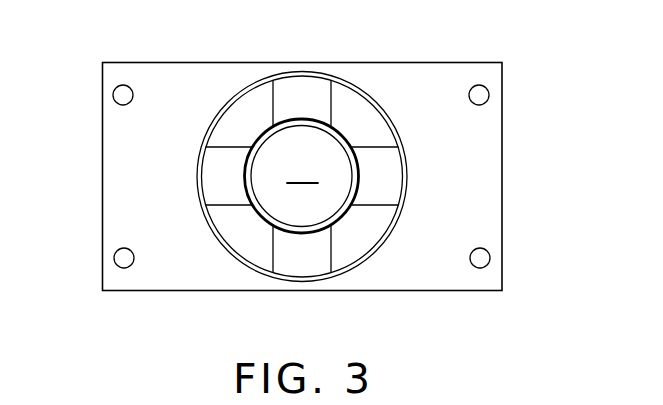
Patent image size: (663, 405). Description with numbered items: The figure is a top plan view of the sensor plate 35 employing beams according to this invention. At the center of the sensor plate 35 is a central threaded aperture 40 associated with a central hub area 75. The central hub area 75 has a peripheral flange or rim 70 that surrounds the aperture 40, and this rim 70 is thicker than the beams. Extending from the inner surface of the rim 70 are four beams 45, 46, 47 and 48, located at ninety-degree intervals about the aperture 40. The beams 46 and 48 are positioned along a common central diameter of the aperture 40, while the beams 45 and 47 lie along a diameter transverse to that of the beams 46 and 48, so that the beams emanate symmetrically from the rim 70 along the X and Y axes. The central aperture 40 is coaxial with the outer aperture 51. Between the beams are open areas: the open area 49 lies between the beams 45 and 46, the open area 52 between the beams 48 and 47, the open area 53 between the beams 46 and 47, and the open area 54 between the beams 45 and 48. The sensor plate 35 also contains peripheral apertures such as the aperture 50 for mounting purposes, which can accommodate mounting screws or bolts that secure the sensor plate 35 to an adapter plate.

The sensor plate 35 is at (471, 139).
The peripheral aperture 50 is at (482, 88).
The beam 46 is at (376, 183).
The peripheral flange or rim 70 is at (337, 127).
The central hub area 75 is at (303, 169).
The beam 45 is at (305, 88).
The beam 47 is at (292, 265).
The beam 48 is at (223, 181).
The open area 49 is at (372, 125).
The open area 54 is at (238, 125).
The open area 53 is at (363, 228).
The open area 52 is at (242, 237).
The outer aperture 51 is at (378, 238).
The central threaded aperture 40 is at (316, 203).